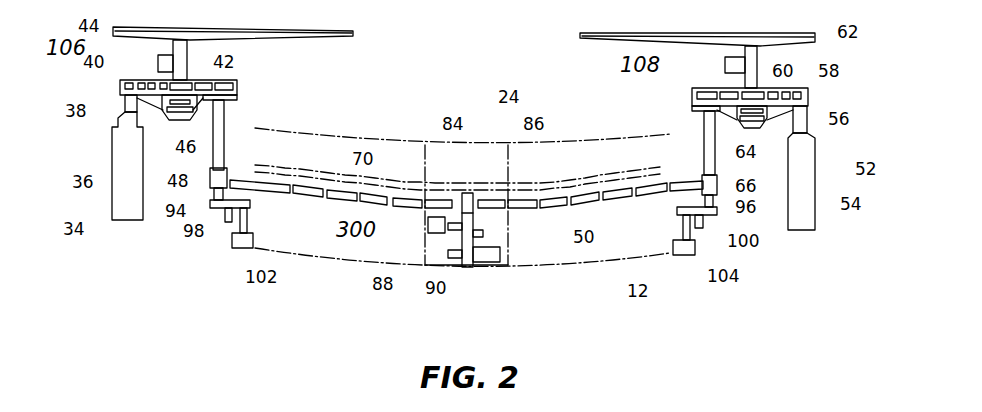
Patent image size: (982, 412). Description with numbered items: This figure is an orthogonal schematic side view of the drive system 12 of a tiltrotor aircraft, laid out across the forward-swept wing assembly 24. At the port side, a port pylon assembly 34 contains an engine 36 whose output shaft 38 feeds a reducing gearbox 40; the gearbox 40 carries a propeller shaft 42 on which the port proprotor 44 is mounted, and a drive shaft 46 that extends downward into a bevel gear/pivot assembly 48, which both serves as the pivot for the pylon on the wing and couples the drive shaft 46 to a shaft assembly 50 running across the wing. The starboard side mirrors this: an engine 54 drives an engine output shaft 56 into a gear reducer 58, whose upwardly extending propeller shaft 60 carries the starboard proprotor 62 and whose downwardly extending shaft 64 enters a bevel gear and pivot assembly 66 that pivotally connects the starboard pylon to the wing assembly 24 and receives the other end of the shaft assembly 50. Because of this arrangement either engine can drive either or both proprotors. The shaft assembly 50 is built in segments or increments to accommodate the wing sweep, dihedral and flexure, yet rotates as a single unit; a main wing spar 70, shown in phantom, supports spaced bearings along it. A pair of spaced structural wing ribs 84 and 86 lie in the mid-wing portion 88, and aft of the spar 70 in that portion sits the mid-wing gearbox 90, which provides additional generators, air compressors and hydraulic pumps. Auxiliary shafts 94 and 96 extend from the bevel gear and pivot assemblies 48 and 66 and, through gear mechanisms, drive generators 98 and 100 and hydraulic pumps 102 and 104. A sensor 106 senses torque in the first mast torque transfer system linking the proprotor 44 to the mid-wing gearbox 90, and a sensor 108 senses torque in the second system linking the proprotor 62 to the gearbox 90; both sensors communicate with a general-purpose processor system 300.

The drive system 12 is at (621, 259).
The wing assembly 24 is at (488, 142).
The port pylon assembly 34 is at (111, 217).
The engine 36 is at (112, 184).
The output shaft 38 is at (125, 110).
The reducing gearbox 40 is at (128, 80).
The propeller shaft 42 is at (190, 62).
The port proprotor 44 is at (113, 28).
The drive shaft 46 is at (213, 148).
The bevel gear/pivot assembly 48 is at (210, 178).
The shaft assembly 50 is at (551, 211).
The engine 54 is at (815, 186).
The engine output shaft 56 is at (810, 114).
The gear reducer 58 is at (804, 88).
The propeller shaft 60 is at (759, 74).
The starboard proprotor 62 is at (815, 34).
The shaft 64 is at (716, 142).
The bevel gear and pivot assembly 66 is at (717, 184).
The main wing spar 70 is at (305, 172).
The structural wing rib 84 is at (427, 152).
The structural wing rib 86 is at (507, 152).
The mid-wing portion 88 is at (425, 266).
The mid-wing gearbox 90 is at (466, 263).
The auxiliary shaft 94 is at (212, 200).
The auxiliary shaft 96 is at (717, 208).
The generator 98 is at (228, 220).
The generator 100 is at (702, 226).
The hydraulic pump 102 is at (240, 248).
The hydraulic pump 104 is at (690, 255).
The sensor 106 is at (158, 58).
The sensor 108 is at (725, 68).
The general-purpose processor system 300 is at (428, 228).